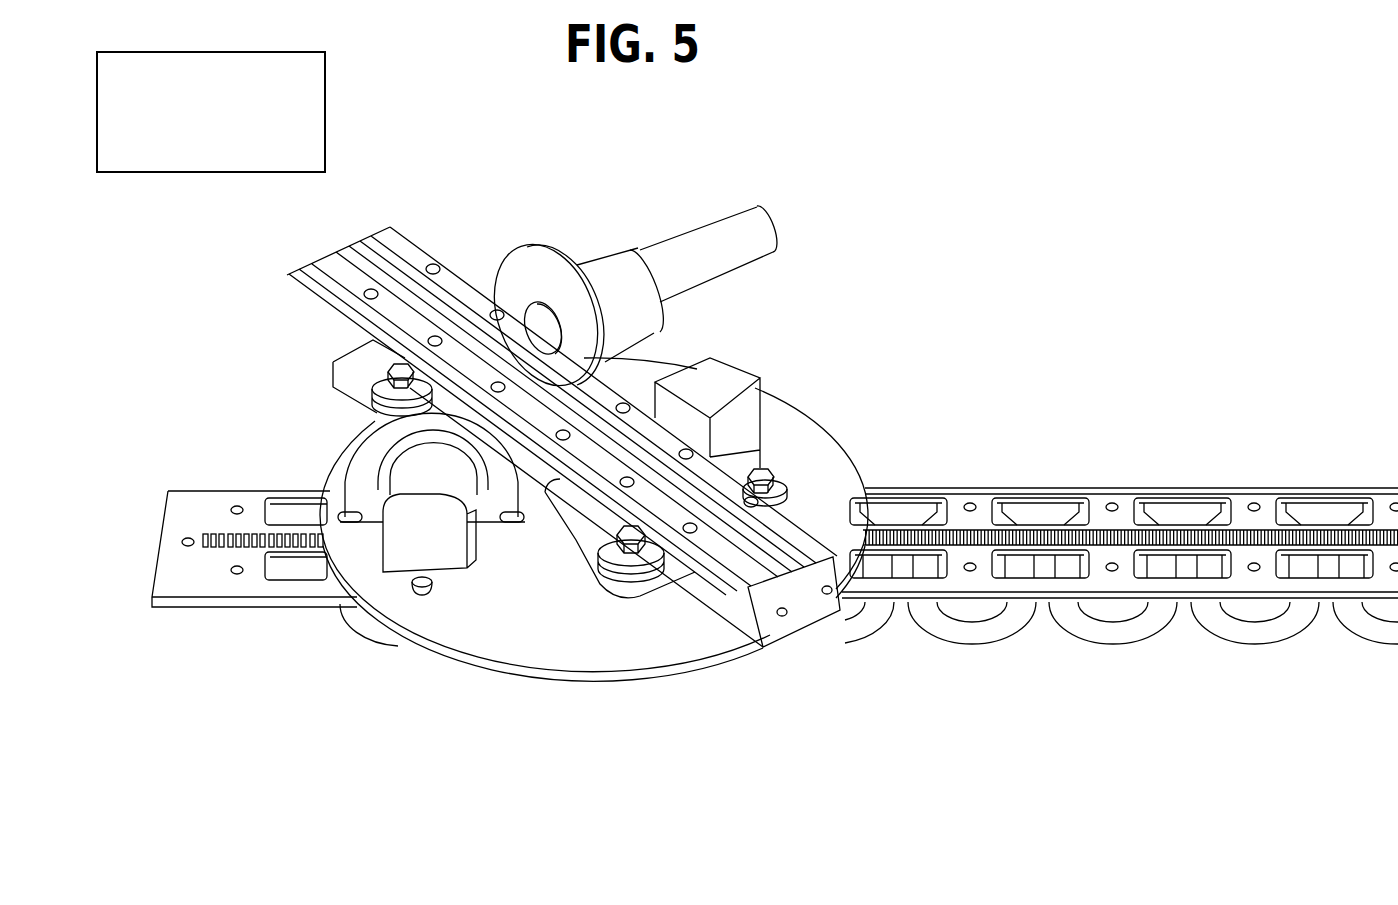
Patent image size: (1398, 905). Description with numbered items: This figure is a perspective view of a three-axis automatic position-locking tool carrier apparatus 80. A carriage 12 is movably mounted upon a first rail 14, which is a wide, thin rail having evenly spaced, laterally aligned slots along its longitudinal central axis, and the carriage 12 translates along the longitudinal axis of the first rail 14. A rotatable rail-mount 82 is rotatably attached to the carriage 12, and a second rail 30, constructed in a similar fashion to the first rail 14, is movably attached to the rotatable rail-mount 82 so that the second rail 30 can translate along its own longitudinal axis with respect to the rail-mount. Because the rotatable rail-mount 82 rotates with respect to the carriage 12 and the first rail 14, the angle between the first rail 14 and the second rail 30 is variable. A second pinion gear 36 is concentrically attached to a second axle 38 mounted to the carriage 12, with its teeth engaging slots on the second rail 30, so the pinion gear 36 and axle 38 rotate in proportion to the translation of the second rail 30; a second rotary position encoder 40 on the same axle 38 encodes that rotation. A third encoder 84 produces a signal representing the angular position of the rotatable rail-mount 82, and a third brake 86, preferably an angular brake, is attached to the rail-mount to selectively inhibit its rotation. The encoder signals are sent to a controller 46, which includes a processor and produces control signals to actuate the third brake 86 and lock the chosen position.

The carriage 12 is at (690, 672).
The first rail 14 is at (1150, 488).
The second rail 30 is at (310, 295).
The second pinion gear 36 is at (558, 243).
The second axle 38 is at (768, 217).
The second rotary position encoder 40 is at (628, 242).
The controller 46 is at (325, 110).
The three-axis automatic position-locking tool carrier apparatus 80 is at (623, 117).
The rotatable rail-mount 82 is at (583, 567).
The third encoder 84 is at (718, 368).
The third brake 86 is at (782, 427).